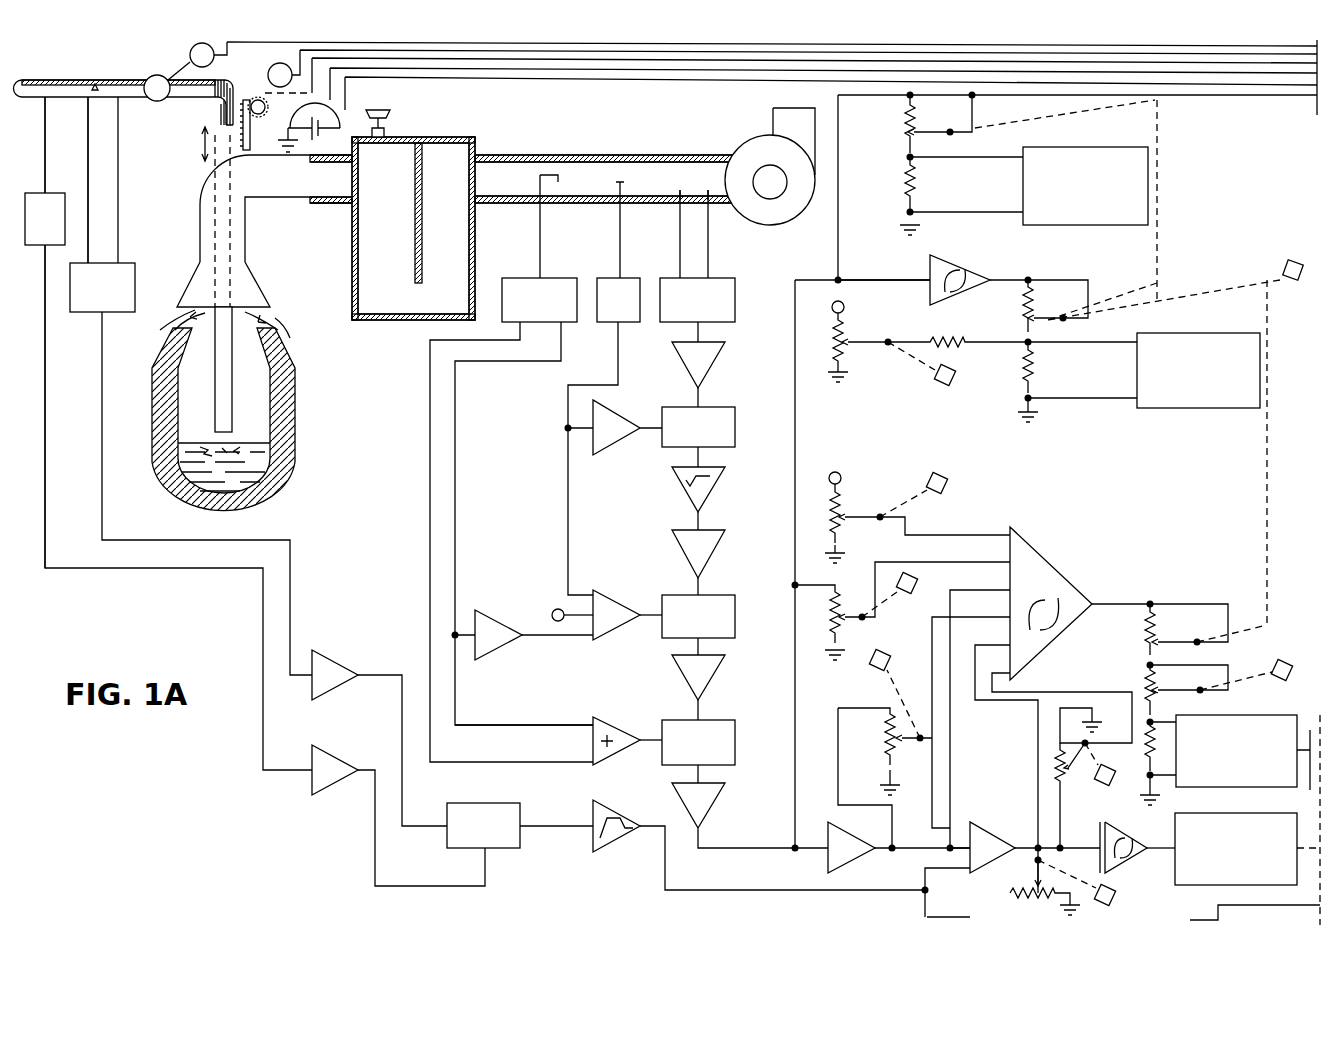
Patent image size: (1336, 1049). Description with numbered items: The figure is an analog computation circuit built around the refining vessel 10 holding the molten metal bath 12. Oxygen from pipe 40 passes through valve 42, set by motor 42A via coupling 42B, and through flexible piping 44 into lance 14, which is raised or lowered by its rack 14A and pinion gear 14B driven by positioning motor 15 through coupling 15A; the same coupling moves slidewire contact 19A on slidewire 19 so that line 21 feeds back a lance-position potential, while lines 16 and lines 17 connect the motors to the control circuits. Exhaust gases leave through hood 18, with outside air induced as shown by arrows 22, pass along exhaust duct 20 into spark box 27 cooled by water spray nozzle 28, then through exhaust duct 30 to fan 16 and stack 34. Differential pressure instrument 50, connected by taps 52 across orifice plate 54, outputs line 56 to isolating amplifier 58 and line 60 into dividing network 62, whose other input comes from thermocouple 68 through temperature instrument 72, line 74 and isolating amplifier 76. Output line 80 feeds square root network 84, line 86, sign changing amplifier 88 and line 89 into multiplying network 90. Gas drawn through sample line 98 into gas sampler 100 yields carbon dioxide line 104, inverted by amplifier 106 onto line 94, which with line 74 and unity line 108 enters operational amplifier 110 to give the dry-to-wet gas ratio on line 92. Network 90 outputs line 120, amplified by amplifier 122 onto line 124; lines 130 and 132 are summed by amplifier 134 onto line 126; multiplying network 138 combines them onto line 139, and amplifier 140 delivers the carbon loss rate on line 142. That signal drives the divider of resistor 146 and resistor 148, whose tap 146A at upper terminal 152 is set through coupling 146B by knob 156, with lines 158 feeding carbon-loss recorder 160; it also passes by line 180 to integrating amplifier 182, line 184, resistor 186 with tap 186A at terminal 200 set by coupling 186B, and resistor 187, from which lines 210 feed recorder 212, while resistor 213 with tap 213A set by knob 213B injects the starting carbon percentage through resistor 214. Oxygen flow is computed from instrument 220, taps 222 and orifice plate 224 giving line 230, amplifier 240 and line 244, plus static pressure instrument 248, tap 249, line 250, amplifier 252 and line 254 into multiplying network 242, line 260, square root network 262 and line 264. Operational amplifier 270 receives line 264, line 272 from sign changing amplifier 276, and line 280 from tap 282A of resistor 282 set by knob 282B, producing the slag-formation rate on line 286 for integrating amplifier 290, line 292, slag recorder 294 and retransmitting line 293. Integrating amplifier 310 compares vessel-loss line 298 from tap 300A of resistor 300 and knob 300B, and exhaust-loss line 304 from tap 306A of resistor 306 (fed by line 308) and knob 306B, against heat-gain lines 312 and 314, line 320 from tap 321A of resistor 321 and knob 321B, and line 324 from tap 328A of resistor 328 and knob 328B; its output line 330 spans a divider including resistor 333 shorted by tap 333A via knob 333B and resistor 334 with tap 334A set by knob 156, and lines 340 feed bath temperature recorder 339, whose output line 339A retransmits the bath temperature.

The furnace vessel 10 is at (295, 418).
The molten metal bath 12 is at (200, 465).
The oxygen lance 14 is at (235, 388).
The lance rack 14A is at (238, 130).
The pinion 14B is at (264, 114).
The gear 15 is at (270, 109).
The lance drive motor 15A is at (266, 96).
The conductor 16 is at (655, 45).
The conductor 17 is at (600, 62).
The hood skirt 18 is at (268, 280).
The battery 19 is at (330, 118).
The switch 19A is at (338, 95).
The exhaust hood duct 20 is at (275, 200).
The conductor 21 is at (560, 75).
The infiltrated air 22 is at (162, 320).
The duct section 27 is at (345, 255).
The gas scrubber 28 is at (386, 138).
The exhaust duct 30 is at (518, 155).
The exhaust fan 34 is at (775, 122).
The oxygen supply pipe 40 is at (52, 78).
The oxygen flow valve 42 is at (157, 101).
The valve motor 42A is at (190, 52).
The valve motor linkage 42B is at (168, 78).
The flexible hose 44 is at (212, 105).
The differential pressure transducer 50 is at (735, 296).
The pitot probe 52 is at (700, 245).
The probe connection 54 is at (690, 168).
The signal line 56 is at (706, 332).
The amplifier 58 is at (715, 368).
The signal line 60 is at (706, 397).
The divider 62 is at (737, 425).
The temperature probe 68 is at (619, 178).
The temperature transducer 72 is at (602, 278).
The temperature signal line 74 is at (618, 352).
The amplifier 76 is at (620, 415).
The signal line 80 is at (706, 459).
The square root extractor 84 is at (715, 490).
The signal line 86 is at (706, 523).
The amplifier 88 is at (712, 556).
The signal line 89 is at (706, 586).
The multiplier 90 is at (737, 612).
The signal line 92 is at (650, 618).
The signal line 94 is at (557, 656).
The gas sampling probe 98 is at (540, 230).
The gas analyzer 100 is at (512, 278).
The CO2 signal line 104 is at (455, 442).
The amplifier 106 is at (500, 620).
The reference voltage source 108 is at (560, 609).
The summing amplifier 110 is at (612, 600).
The signal line 120 is at (706, 645).
The amplifier 122 is at (715, 680).
The signal line 124 is at (706, 710).
The signal line 126 is at (650, 745).
The signal line 130 is at (510, 725).
The CO signal line 132 is at (430, 490).
The summing amplifier 134 is at (612, 720).
The multiplier 138 is at (737, 742).
The signal line 139 is at (706, 774).
The amplifier 140 is at (718, 800).
The carbon rate signal line 142 is at (868, 95).
The potentiometer 146 is at (906, 130).
The potentiometer output line 146A is at (962, 148).
The mechanical linkage 146B is at (1035, 118).
The resistor 148 is at (905, 185).
The supply line 152 is at (915, 102).
The bath metal weight setter 156 is at (1288, 262).
The line 158 is at (945, 212).
The carbon loss recorder 160 is at (1110, 147).
The input line 180 is at (910, 280).
The integrator 182 is at (960, 262).
The output line 184 is at (1010, 280).
The potentiometer 186 is at (1025, 310).
The potentiometer wiper 186A is at (1048, 323).
The mechanical linkage 186B is at (1132, 296).
The resistor 187 is at (1024, 365).
The junction 200 is at (1030, 280).
The recorder input lines 210 is at (1060, 385).
The bath carbon recorder 212 is at (1196, 333).
The potentiometer 213 is at (832, 342).
The potentiometer wiper 213A is at (850, 348).
The adjusting knob 213B is at (950, 384).
The resistor 214 is at (940, 340).
The differential pressure transducer 220 is at (136, 280).
The pressure lead 222 is at (90, 180).
The pressure tap 224 is at (88, 80).
The signal line 230 is at (102, 470).
The amplifier 240 is at (345, 665).
The multiplier 242 is at (490, 803).
The signal line 244 is at (402, 800).
The pressure transducer 248 is at (161, 481).
The pressure lead 249 is at (45, 135).
The signal line 250 is at (48, 410).
The amplifier 252 is at (345, 760).
The signal line 254 is at (375, 858).
The oxygen flow signal line 260 is at (565, 830).
The function generator 262 is at (622, 820).
The signal line 264 is at (665, 858).
The summing amplifier 270 is at (1000, 822).
The signal line 272 is at (918, 850).
The amplifier 276 is at (842, 832).
The ground connection 280 is at (886, 790).
The potentiometer 282 is at (888, 738).
The potentiometer wiper 282A is at (935, 742).
The adjusting knob 282B is at (873, 662).
The signal line 286 is at (1032, 846).
The integrator 290 is at (1115, 836).
The output line 292 is at (1165, 850).
The recorder connection line 293 is at (1318, 845).
The slag recorder 294 is at (1246, 813).
The signal line 298 is at (975, 535).
The potentiometer 300 is at (830, 518).
The potentiometer wiper 300A is at (850, 514).
The adjusting knob 300B is at (948, 478).
The signal line 304 is at (968, 562).
The potentiometer 306 is at (830, 620).
The potentiometer wiper 306A is at (850, 614).
The adjusting knob 306B is at (907, 600).
The ground connection 308 is at (825, 553).
The integrating amplifier 310 is at (1065, 582).
The input line 312 is at (975, 590).
The input line 314 is at (992, 617).
The feedback loop 320 is at (1062, 700).
The potentiometer 321 is at (1058, 745).
The potentiometer wiper 321A is at (1085, 775).
The adjusting knob 321B is at (1118, 764).
The feedback line 324 is at (992, 645).
The potentiometer 328 is at (1020, 895).
The potentiometer wiper 328A is at (1036, 875).
The adjusting knob 328B is at (1118, 898).
The output line 330 is at (1128, 604).
The voltage divider resistor 333 is at (1167, 723).
The divider tap 333A is at (1162, 690).
The adjusting knob 333B is at (1285, 660).
The voltage divider resistor 334 is at (1146, 630).
The divider tap 334A is at (1162, 642).
The recorder input line 339 is at (1226, 715).
The recorder connection 339A is at (1310, 730).
The ground connection 340 is at (1172, 800).